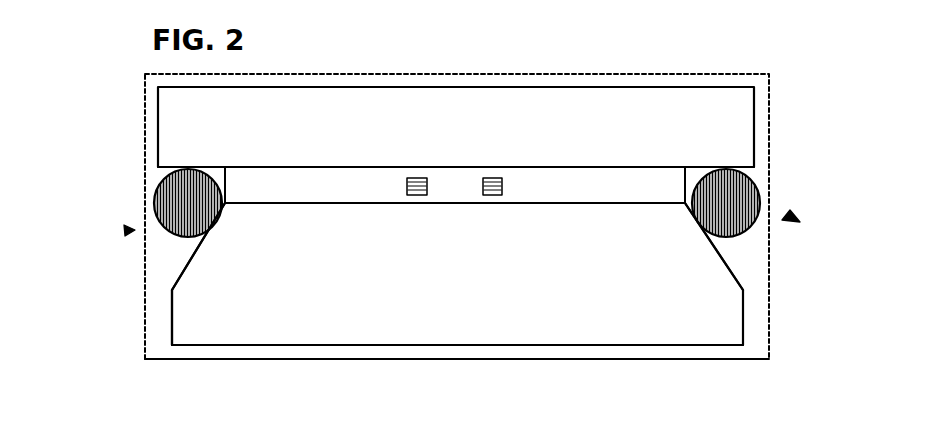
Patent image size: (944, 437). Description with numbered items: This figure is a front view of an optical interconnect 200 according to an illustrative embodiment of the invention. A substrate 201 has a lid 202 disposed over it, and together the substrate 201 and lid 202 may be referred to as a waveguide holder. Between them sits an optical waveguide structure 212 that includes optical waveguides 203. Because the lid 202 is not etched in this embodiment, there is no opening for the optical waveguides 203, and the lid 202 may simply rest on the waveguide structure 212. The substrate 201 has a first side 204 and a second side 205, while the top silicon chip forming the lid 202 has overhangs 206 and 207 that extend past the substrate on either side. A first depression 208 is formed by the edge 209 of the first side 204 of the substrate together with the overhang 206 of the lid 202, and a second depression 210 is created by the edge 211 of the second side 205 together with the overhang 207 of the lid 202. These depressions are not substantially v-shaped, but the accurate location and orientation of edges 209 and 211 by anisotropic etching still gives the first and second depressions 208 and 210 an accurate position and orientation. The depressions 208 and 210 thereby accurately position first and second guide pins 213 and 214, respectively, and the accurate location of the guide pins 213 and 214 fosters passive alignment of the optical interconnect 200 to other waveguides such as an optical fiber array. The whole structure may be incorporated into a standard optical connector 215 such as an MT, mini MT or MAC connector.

The optical interconnect 200 is at (813, 50).
The substrate 201 is at (735, 302).
The lid 202 is at (738, 104).
The optical waveguides 203 is at (427, 177).
The first side 204 is at (757, 330).
The second side 205 is at (173, 327).
The overhang 206 is at (757, 162).
The overhang 207 is at (158, 175).
The first depression 208 is at (788, 219).
The edge 209 is at (725, 268).
The second depression 210 is at (128, 231).
The edge 211 is at (181, 275).
The optical waveguide structure 212 is at (583, 167).
The first guide pin 213 is at (763, 202).
The second guide pin 214 is at (148, 215).
The optical connector 215 is at (475, 360).